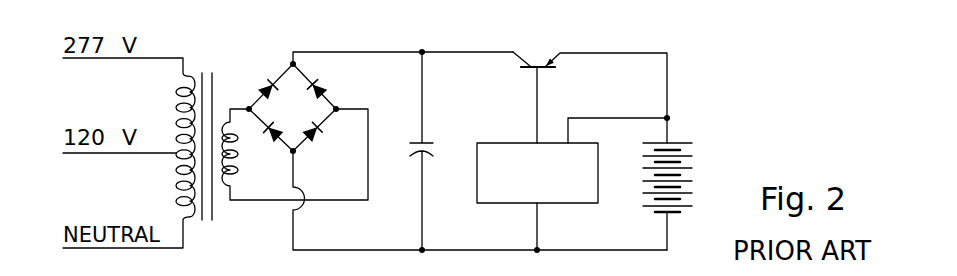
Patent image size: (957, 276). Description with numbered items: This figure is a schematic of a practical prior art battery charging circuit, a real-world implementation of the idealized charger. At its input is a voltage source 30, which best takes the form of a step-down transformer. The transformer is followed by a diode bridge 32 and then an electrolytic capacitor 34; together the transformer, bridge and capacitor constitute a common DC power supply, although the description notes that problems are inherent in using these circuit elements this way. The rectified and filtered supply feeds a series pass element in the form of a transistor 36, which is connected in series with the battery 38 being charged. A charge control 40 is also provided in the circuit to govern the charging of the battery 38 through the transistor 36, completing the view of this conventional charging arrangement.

The voltage source 30 is at (230, 53).
The diode bridge 32 is at (338, 82).
The electrolytic capacitor 34 is at (437, 130).
The transistor 36 is at (560, 32).
The battery 38 is at (693, 133).
The charge control 40 is at (578, 204).